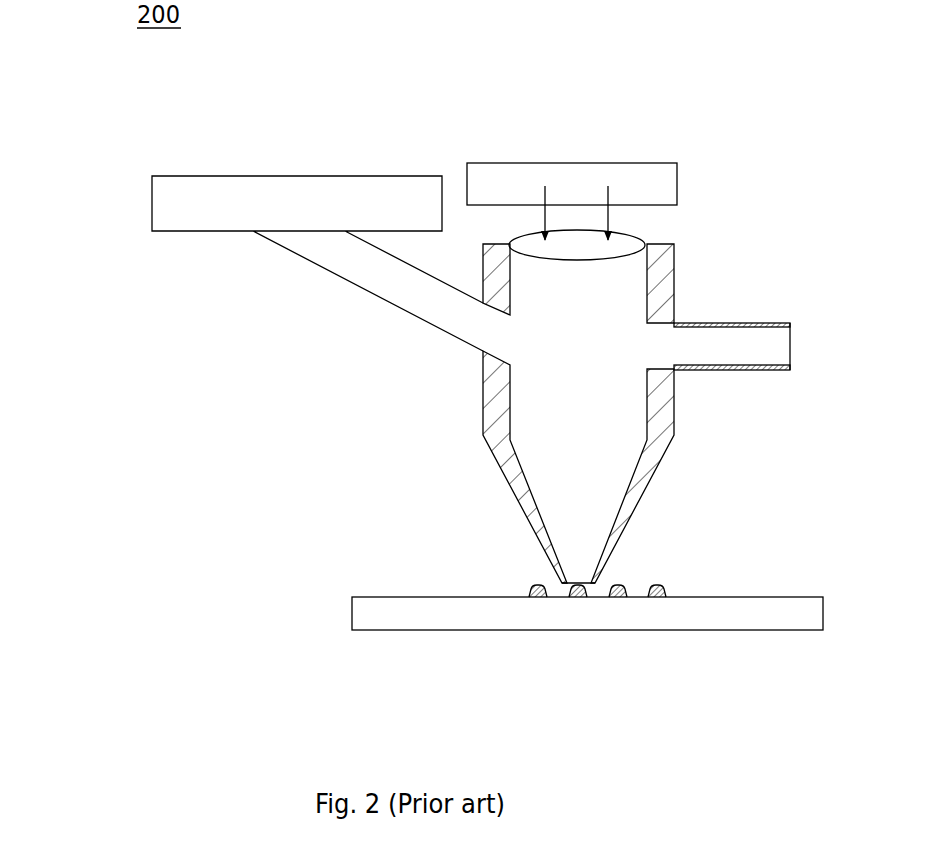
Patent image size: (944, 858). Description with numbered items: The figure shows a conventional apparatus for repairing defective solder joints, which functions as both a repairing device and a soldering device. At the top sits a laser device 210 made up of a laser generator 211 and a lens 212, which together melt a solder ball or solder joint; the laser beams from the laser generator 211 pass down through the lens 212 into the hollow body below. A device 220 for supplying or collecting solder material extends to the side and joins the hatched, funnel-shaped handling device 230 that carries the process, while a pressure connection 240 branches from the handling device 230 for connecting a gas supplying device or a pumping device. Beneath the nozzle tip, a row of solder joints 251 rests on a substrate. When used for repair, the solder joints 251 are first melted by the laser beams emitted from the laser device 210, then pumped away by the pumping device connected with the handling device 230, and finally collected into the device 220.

The laser device 210 is at (698, 191).
The laser generator 211 is at (595, 172).
The lens 212 is at (625, 242).
The device for supplying or collecting solder material 220 is at (172, 202).
The handling device 230 is at (681, 413).
The pressure connection 240 is at (700, 343).
The solder joints 251 is at (657, 597).